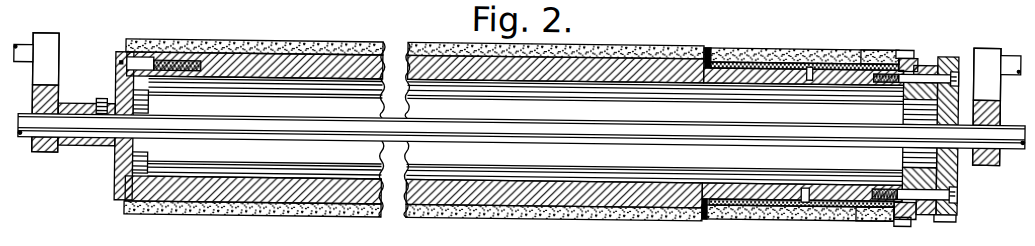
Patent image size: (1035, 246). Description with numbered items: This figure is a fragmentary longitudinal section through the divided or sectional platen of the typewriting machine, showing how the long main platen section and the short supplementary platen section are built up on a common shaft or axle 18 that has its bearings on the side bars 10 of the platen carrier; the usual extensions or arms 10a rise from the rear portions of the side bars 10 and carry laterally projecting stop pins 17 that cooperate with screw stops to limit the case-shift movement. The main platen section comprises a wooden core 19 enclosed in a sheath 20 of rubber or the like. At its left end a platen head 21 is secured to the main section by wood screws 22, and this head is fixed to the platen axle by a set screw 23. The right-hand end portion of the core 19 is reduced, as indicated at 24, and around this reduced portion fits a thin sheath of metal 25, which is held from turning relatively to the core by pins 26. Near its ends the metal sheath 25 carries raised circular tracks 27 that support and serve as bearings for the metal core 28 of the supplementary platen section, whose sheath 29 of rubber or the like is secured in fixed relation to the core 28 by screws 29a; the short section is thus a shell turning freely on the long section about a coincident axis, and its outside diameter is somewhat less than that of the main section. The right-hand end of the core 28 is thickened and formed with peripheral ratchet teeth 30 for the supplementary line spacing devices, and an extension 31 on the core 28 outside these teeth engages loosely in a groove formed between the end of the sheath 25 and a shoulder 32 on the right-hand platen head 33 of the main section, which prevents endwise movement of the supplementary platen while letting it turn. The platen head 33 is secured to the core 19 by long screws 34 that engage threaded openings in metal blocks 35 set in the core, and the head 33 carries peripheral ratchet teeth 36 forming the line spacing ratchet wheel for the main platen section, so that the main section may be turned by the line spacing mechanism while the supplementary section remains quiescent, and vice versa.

The side bars 10 is at (48, 88).
The extensions or arms 10a is at (45, 40).
The stop pins 17 is at (20, 64).
The shaft or axle 18 is at (24, 137).
The wooden core 19 is at (387, 59).
The sheath 20 is at (290, 45).
The platen head 21 is at (118, 84).
The wood screws 22 is at (138, 64).
The set screw 23 is at (97, 105).
The reduced portion 24 is at (748, 68).
The sheath of metal 25 is at (795, 66).
The pins 26 is at (810, 67).
The raised circular tracks 27 is at (730, 50).
The metal core 28 is at (780, 56).
The sheath 29 is at (760, 45).
The screws 29a is at (855, 223).
The peripheral ratchet teeth 30 is at (912, 48).
The extension 31 is at (925, 62).
The shoulder 32 is at (937, 52).
The platen head 33 is at (955, 169).
The long screws 34 is at (957, 70).
The metal blocks 35 is at (882, 75).
The peripheral ratchet teeth 36 is at (943, 214).